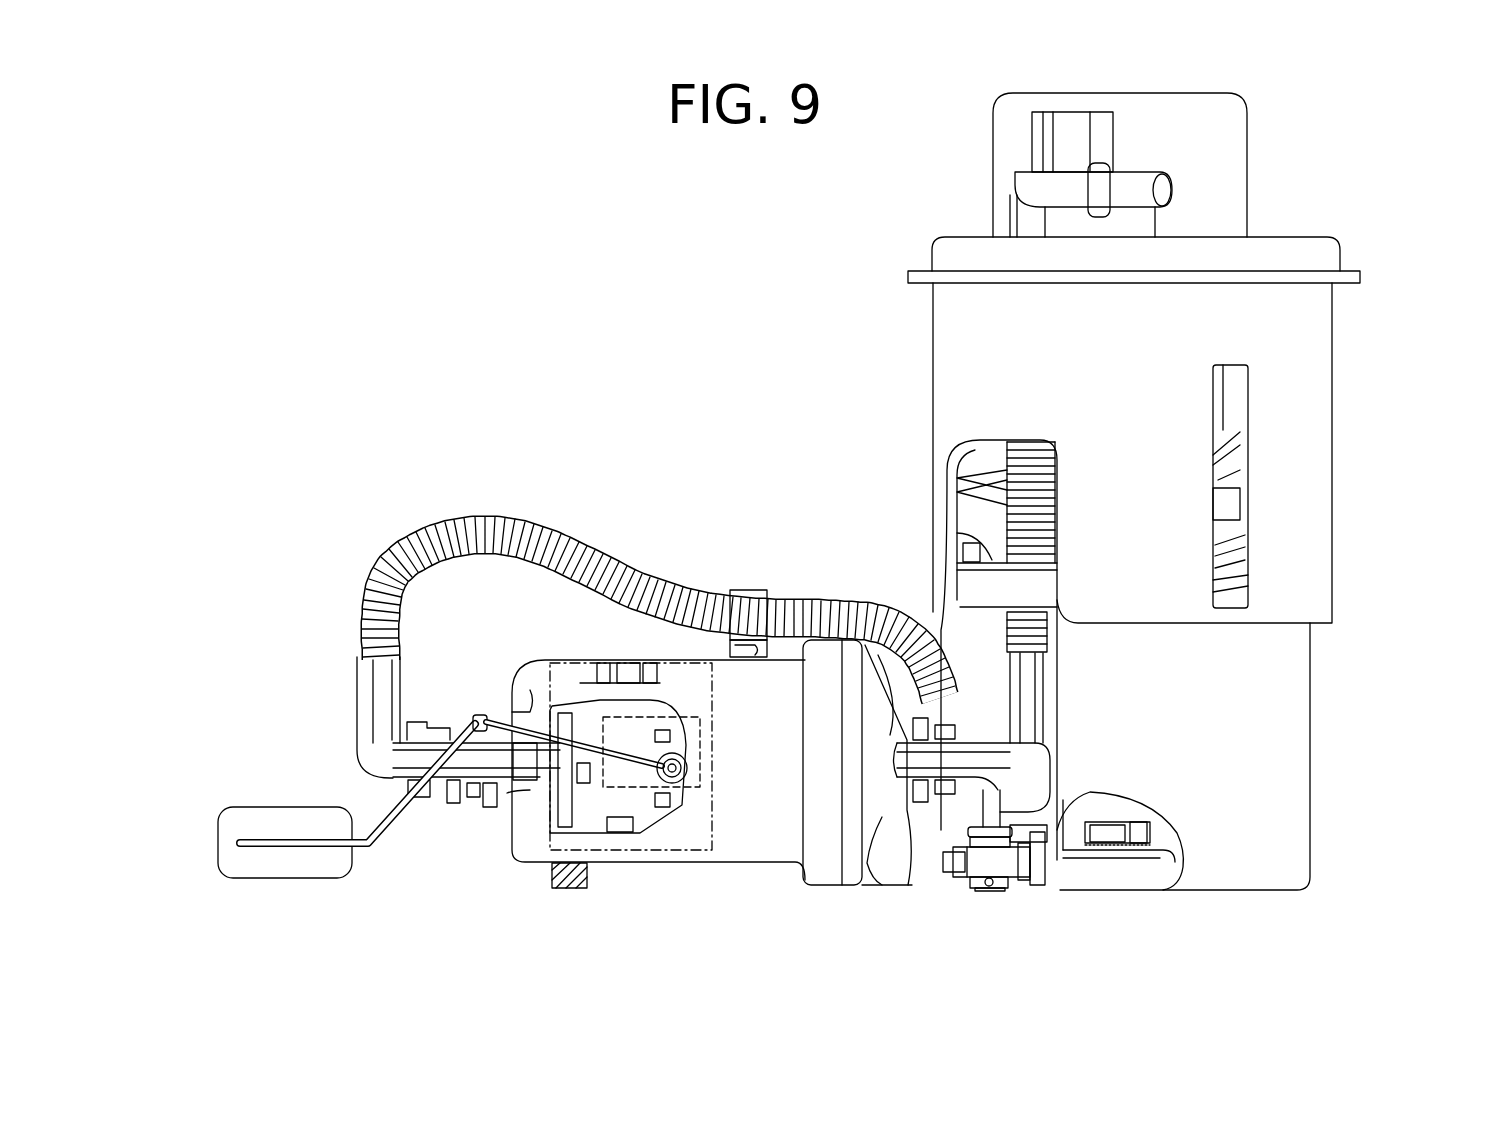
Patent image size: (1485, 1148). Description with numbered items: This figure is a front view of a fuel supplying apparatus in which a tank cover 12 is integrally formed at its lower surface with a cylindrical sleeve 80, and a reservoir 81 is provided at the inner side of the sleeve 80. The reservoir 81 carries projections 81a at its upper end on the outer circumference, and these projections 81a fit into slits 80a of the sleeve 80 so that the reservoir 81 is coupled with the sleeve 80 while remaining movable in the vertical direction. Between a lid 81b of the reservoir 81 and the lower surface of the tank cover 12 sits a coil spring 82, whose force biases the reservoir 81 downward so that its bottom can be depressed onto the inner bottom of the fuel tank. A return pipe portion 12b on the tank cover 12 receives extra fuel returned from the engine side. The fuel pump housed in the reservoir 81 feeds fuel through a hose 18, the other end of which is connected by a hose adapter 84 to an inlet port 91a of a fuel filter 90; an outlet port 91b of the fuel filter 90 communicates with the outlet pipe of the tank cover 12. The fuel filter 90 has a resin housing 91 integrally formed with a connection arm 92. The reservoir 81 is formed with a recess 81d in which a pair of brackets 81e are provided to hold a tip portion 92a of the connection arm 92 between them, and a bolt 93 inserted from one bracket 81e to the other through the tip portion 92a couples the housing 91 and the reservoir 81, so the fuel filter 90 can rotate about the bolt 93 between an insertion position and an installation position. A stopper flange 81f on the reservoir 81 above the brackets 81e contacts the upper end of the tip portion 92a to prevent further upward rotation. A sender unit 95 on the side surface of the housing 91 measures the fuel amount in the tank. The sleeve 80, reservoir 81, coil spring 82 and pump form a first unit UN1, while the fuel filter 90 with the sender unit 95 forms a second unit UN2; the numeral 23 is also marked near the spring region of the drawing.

The tank cover 12 is at (1290, 277).
The return pipe portion 12b is at (1170, 172).
The first unit UN1 is at (878, 340).
The sleeve 80 is at (1302, 425).
The slit 80a is at (1237, 378).
The reservoir 81 is at (1290, 690).
The projection 81a is at (1242, 582).
The lid 81b is at (995, 548).
The recess 81d is at (1052, 852).
The bracket 81e is at (968, 880).
The stopper flange 81f is at (1000, 832).
The coil spring 82 is at (990, 468).
The spring 23 is at (1005, 512).
The hose 18 is at (572, 548).
The hose adapter 84 is at (425, 722).
The fuel filter 90 is at (630, 875).
The housing 91 is at (535, 668).
The inlet port 91a is at (472, 788).
The outlet port 91b is at (858, 628).
The connection arm 92 is at (889, 872).
The tip portion 92a is at (992, 890).
The bolt 93 is at (1040, 875).
The sender unit 95 is at (662, 833).
The second unit UN2 is at (761, 880).